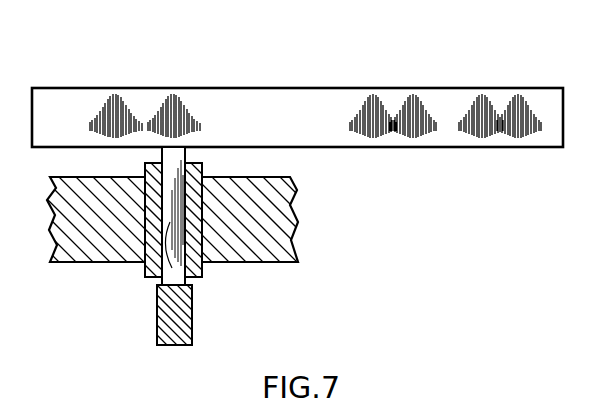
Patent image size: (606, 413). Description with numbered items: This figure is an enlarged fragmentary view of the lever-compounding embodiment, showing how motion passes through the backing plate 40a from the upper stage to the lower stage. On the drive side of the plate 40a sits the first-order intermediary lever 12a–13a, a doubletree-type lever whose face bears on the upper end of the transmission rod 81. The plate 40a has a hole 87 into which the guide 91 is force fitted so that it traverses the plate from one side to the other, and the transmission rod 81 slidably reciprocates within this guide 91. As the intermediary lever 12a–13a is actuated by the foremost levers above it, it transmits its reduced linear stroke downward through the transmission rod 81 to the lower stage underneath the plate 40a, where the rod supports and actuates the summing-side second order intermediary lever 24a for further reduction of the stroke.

The first-order intermediary lever 13a is at (83, 110).
The first-order intermediary lever 12a is at (343, 115).
The backing plate 40a is at (278, 216).
The guide 91 is at (204, 164).
The transmission rod 81 is at (178, 160).
The hole 87 is at (152, 277).
The second order intermediary lever 24a is at (192, 322).